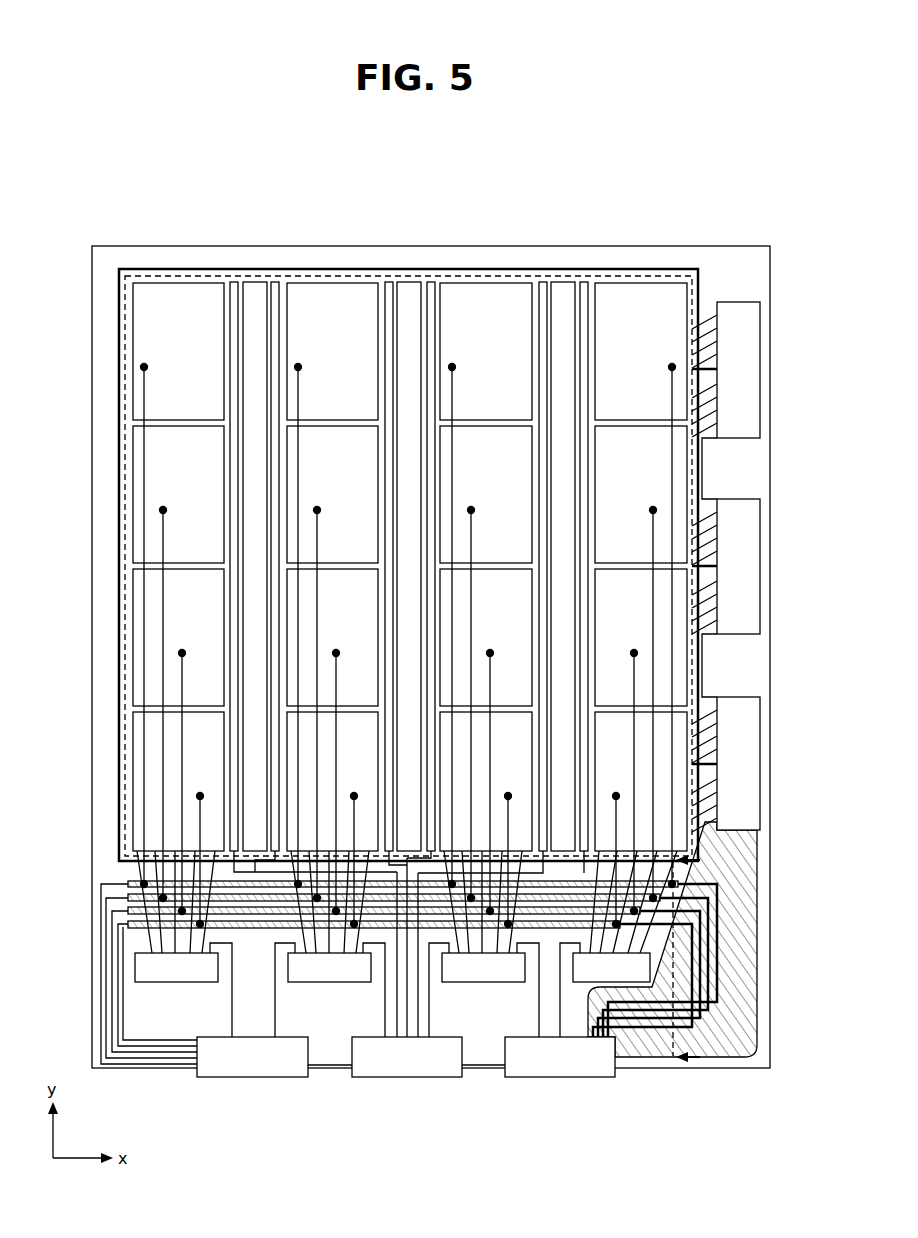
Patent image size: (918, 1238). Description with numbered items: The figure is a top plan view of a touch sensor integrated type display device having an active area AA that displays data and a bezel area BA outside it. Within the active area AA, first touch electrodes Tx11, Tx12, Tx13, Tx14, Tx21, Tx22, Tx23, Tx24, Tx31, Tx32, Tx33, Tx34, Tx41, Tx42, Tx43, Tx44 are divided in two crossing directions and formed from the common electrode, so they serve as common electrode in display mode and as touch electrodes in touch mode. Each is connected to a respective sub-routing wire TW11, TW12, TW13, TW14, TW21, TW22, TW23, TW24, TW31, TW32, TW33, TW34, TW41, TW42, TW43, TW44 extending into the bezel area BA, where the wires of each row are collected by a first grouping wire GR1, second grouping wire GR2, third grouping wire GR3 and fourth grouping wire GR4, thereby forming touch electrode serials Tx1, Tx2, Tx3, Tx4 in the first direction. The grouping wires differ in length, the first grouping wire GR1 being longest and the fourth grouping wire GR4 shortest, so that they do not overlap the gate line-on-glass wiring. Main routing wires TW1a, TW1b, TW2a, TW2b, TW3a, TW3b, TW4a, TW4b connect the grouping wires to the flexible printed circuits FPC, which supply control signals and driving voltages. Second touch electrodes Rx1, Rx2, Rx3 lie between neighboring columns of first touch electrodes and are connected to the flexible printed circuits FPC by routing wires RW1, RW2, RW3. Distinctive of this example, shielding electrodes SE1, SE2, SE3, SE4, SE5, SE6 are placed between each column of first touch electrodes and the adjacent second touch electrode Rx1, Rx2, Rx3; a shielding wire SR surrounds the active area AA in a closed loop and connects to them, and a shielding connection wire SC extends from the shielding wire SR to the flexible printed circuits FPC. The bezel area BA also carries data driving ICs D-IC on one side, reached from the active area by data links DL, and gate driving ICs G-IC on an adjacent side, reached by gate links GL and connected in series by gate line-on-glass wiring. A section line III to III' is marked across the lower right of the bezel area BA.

The shielding connection wire SC is at (102, 1008).
The shielding wire SR is at (118, 290).
The active area AA is at (624, 266).
The bezel area BA is at (740, 261).
The 1-1 touch electrode serial Tx1 is at (118, 361).
The 1-2 touch electrode serial Tx2 is at (118, 504).
The 1-3 touch electrode serial Tx3 is at (118, 647).
The 1-4 touch electrode serial Tx4 is at (118, 790).
The 1-1 touch electrode Tx11 is at (178, 351).
The 1-1 touch electrode Tx12 is at (332, 351).
The 1-1 touch electrode Tx13 is at (486, 351).
The 1-1 touch electrode Tx14 is at (641, 351).
The 1-2 touch electrode Tx21 is at (178, 494).
The 1-2 touch electrode Tx22 is at (332, 494).
The 1-2 touch electrode Tx23 is at (486, 494).
The 1-2 touch electrode Tx24 is at (641, 494).
The 1-3 touch electrode Tx31 is at (178, 637).
The 1-3 touch electrode Tx32 is at (332, 637).
The 1-3 touch electrode Tx33 is at (486, 637).
The 1-3 touch electrode Tx34 is at (641, 637).
The 1-4 touch electrode Tx41 is at (178, 781).
The 1-4 touch electrode Tx42 is at (332, 781).
The 1-4 touch electrode Tx43 is at (486, 781).
The 1-4 touch electrode Tx44 is at (641, 781).
The 2-1 touch electrode Rx1 is at (255, 566).
The 2-2 touch electrode Rx2 is at (409, 566).
The 2-3 touch electrode Rx3 is at (563, 566).
The first shielding electrode SE1 is at (234, 282).
The second shielding electrode SE2 is at (275, 282).
The third shielding electrode SE3 is at (389, 282).
The fourth shielding electrode SE4 is at (431, 282).
The fifth shielding electrode SE5 is at (543, 282).
The sixth shielding electrode SE6 is at (584, 282).
The 1-1 sub-routing wire TW11 is at (150, 392).
The 1-1 sub-routing wire TW12 is at (304, 392).
The 1-1 sub-routing wire TW13 is at (458, 392).
The 1-1 sub-routing wire TW14 is at (668, 392).
The 1-2 sub-routing wire TW21 is at (169, 535).
The 1-2 sub-routing wire TW22 is at (323, 535).
The 1-2 sub-routing wire TW23 is at (477, 535).
The 1-2 sub-routing wire TW24 is at (649, 535).
The 1-3 sub-routing wire TW31 is at (182, 649).
The 1-3 sub-routing wire TW32 is at (336, 649).
The 1-3 sub-routing wire TW33 is at (490, 649).
The 1-3 sub-routing wire TW34 is at (638, 643).
The 1-4 sub-routing wire TW41 is at (208, 785).
The 1-4 sub-routing wire TW42 is at (362, 785).
The 1-4 sub-routing wire TW43 is at (516, 785).
The 1-4 sub-routing wire TW44 is at (620, 785).
The first grouping wire GR1 is at (115, 883).
The second grouping wire GR2 is at (115, 897).
The third grouping wire GR3 is at (115, 909).
The fourth grouping wire GR4 is at (115, 922).
The 1-1 main routing wire TW1a is at (110, 1068).
The 1-2 main routing wire TW2a is at (135, 1060).
The 1-3 main routing wire TW3a is at (163, 1054).
The 1-4 main routing wire TW4a is at (188, 1048).
The 1-1 main routing wire TW1b is at (629, 1060).
The 1-2 main routing wire TW2b is at (645, 1060).
The 1-3 main routing wire TW3b is at (668, 1060).
The 1-4 main routing wire TW4b is at (725, 1060).
The section line III is at (692, 947).
The section line III' is at (693, 1070).
The data link DL is at (137, 858).
The data driving IC D-IC is at (392, 967).
The flexible printed circuit FPC is at (406, 1057).
The gate driving IC G-IC is at (731, 566).
The gate link GL is at (714, 324).
The 2-1 routing wire RW1 is at (396, 996).
The 2-2 routing wire RW2 is at (406, 1020).
The 2-3 routing wire RW3 is at (418, 1020).